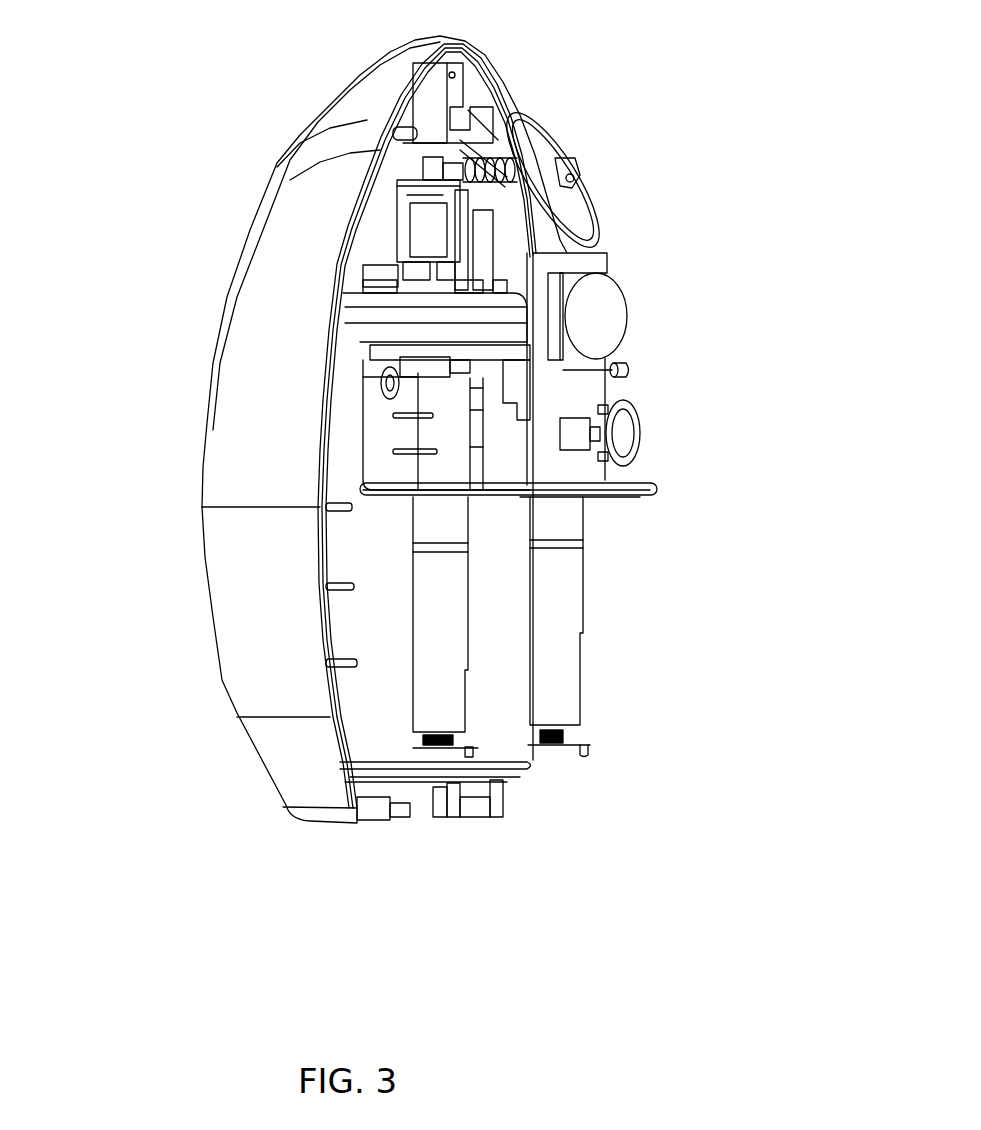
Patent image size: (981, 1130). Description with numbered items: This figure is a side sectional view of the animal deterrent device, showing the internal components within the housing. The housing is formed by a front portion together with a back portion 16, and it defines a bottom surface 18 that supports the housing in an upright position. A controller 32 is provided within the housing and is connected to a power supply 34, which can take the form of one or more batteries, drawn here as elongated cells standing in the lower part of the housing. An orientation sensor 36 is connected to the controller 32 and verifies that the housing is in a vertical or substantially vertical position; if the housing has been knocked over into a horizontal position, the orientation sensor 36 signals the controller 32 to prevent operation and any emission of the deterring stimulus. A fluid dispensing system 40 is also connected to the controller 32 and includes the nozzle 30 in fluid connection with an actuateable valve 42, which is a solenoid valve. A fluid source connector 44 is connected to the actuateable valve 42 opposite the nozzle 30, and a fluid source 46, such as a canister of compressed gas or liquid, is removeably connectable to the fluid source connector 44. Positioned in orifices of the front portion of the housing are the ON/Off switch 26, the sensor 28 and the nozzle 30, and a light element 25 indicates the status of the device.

The back portion 16 is at (343, 63).
The bottom surface 18 is at (307, 820).
The fluid dispensing system 40 is at (380, 177).
The actuateable valve 42 is at (417, 210).
The fluid source connector 44 is at (387, 306).
The orientation sensor 36 is at (383, 384).
The nozzle 30 is at (570, 162).
The controller 32 is at (607, 247).
The sensor 28 is at (623, 307).
The light element 25 is at (632, 370).
The ON/Off switch 26 is at (640, 448).
The fluid source 46 is at (507, 713).
The power supply 34 is at (580, 662).